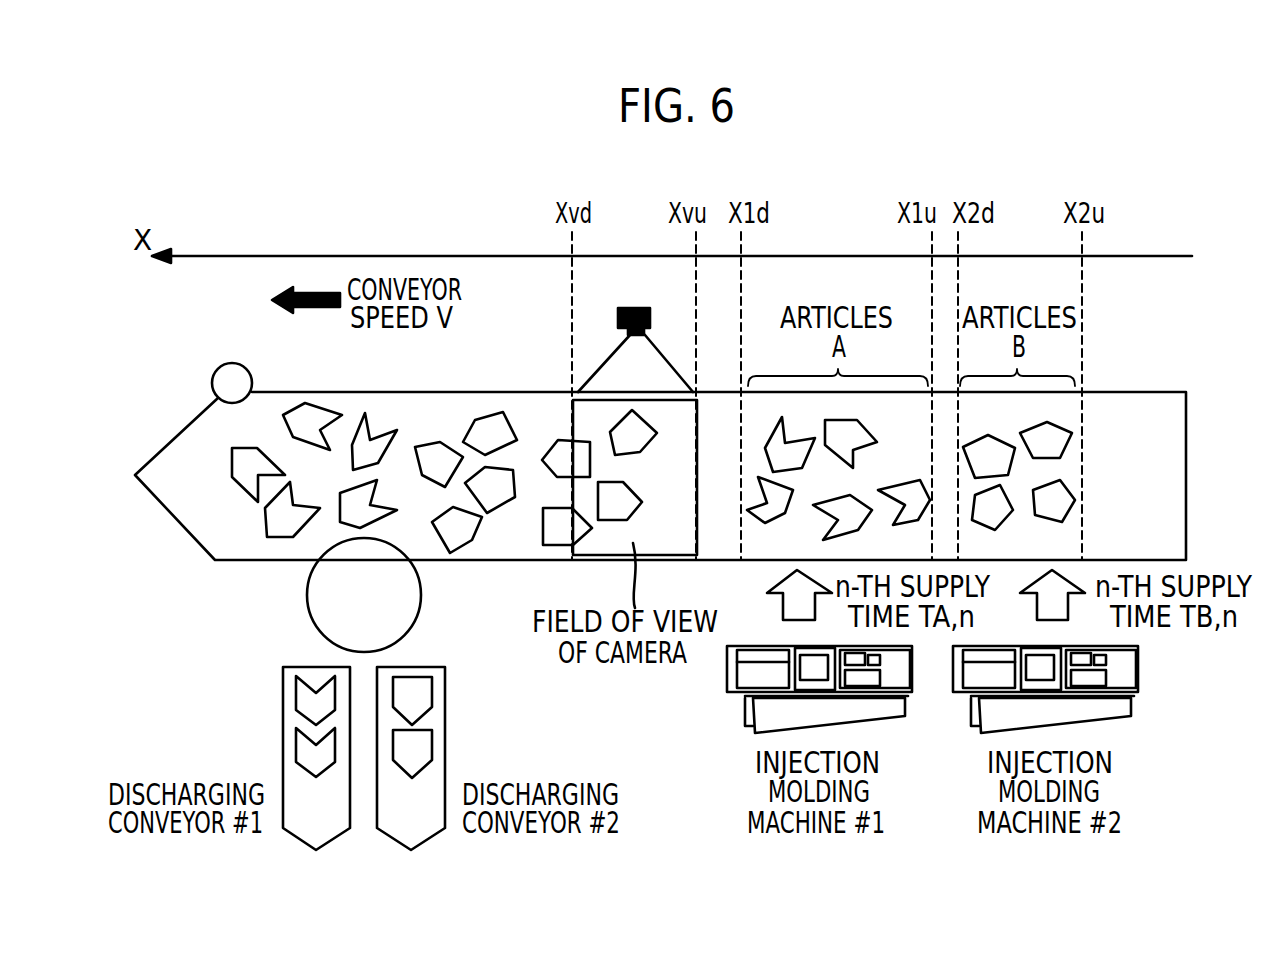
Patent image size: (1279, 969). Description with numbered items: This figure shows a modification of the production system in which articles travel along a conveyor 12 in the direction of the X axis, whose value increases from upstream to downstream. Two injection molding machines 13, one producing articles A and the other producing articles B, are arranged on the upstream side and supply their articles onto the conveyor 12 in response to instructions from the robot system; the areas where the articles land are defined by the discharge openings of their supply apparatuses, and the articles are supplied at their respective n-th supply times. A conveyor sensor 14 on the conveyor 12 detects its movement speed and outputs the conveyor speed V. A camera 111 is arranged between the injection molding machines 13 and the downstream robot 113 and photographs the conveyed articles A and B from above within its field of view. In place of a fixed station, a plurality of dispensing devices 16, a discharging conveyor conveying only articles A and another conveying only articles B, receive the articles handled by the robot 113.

The conveyor 12 is at (1153, 390).
The injection molding machine 13 is at (725, 685).
The conveyor sensor 14 is at (218, 370).
The dispensing device 16 is at (283, 718).
The camera 111 is at (652, 322).
The robot 113 is at (306, 592).